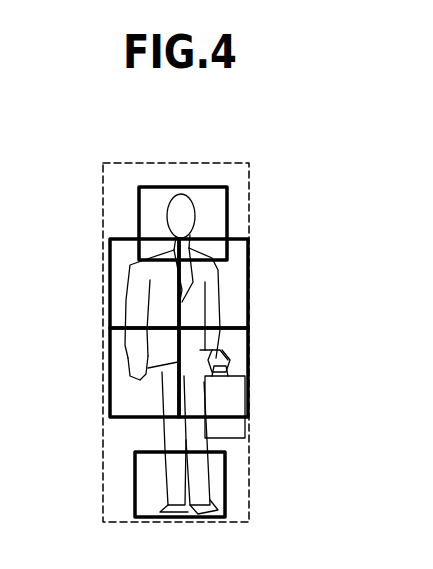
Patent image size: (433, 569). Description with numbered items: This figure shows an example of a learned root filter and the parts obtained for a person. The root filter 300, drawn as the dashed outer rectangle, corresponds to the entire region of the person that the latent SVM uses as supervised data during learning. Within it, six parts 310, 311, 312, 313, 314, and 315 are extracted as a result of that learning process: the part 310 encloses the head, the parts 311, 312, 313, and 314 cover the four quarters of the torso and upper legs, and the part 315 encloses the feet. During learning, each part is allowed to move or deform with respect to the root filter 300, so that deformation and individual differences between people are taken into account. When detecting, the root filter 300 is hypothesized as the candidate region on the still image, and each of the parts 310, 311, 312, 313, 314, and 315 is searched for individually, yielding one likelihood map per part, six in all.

The root filter 300 is at (122, 163).
The part 310 is at (218, 187).
The part 311 is at (110, 239).
The part 312 is at (248, 239).
The part 313 is at (118, 419).
The part 314 is at (244, 419).
The part 315 is at (228, 493).